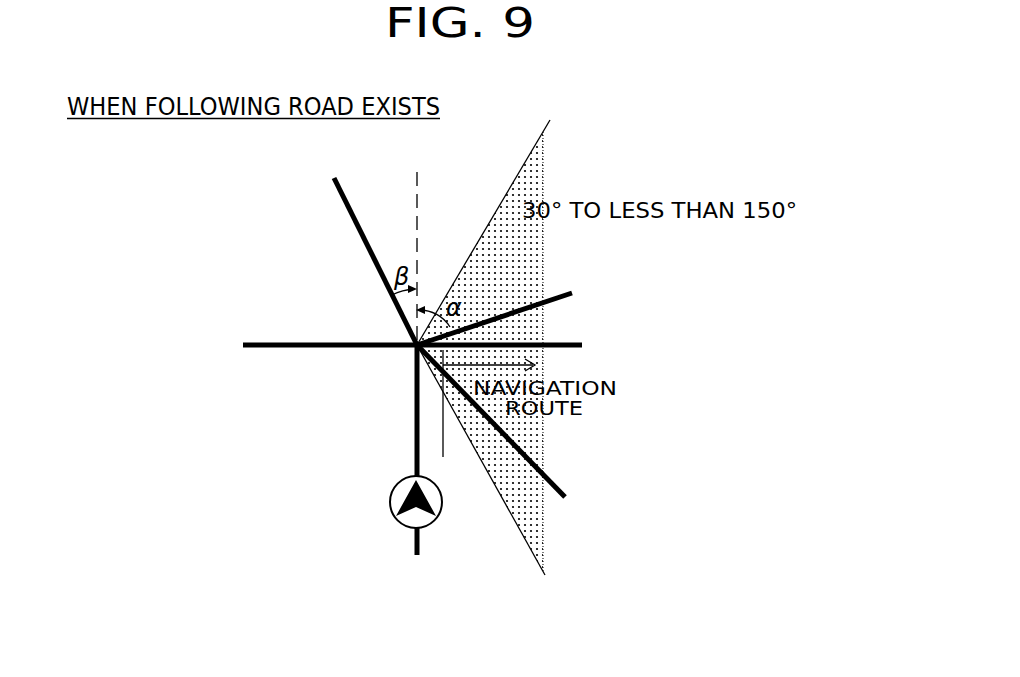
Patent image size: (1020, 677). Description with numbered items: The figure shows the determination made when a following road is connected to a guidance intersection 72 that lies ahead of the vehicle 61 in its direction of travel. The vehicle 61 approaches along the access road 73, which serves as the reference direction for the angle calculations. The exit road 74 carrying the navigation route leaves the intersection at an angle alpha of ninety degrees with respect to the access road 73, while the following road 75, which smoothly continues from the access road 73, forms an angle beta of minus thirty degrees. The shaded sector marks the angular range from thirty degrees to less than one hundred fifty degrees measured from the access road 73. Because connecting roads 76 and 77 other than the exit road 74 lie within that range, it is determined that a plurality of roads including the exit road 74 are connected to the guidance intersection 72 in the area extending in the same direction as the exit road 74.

The vehicle 61 is at (393, 505).
The guidance intersection 72 is at (358, 316).
The access road 73 is at (410, 410).
The exit road 74 is at (584, 350).
The following road 75 is at (358, 228).
The connecting road 76 is at (528, 307).
The connecting road 77 is at (563, 483).